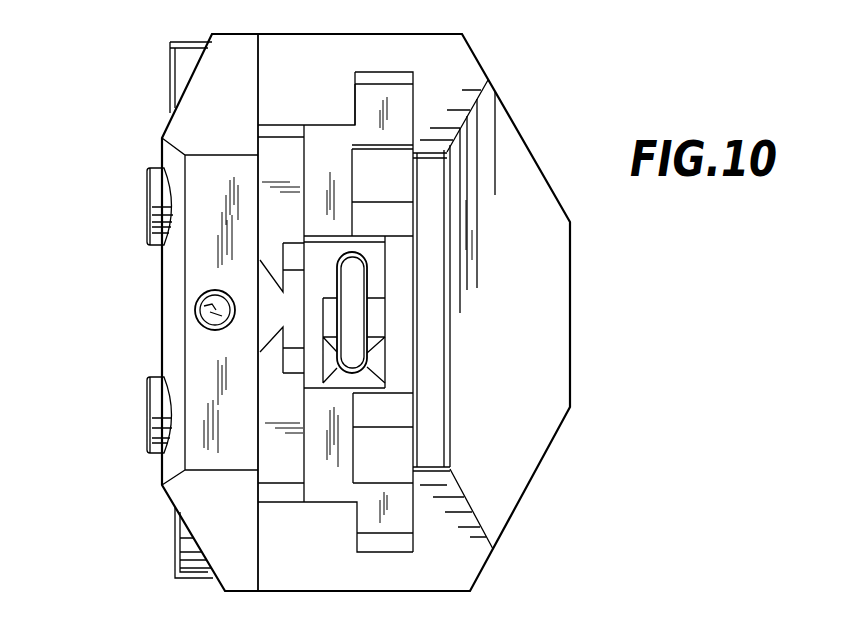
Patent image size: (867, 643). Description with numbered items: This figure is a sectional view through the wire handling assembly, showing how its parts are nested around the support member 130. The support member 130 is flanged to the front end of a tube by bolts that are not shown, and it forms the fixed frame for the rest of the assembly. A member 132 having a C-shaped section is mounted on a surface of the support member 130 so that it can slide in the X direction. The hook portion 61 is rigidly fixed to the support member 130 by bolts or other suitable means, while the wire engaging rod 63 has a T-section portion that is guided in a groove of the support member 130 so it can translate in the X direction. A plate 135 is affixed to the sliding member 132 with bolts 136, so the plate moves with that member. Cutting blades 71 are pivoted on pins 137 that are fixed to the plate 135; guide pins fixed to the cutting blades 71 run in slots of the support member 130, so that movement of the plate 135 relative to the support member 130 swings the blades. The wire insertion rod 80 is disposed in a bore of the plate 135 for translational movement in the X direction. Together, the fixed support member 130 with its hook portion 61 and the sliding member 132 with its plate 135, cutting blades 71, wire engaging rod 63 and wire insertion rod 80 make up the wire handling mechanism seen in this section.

The hook portion 61 is at (360, 268).
The wire engaging rod 63 is at (377, 320).
The cutting blades 71 is at (278, 182).
The wire insertion rod 80 is at (198, 302).
The support member 130 is at (395, 102).
The member 132 is at (517, 507).
The plate 135 is at (185, 472).
The bolts 136 is at (175, 562).
The pins 137 is at (147, 238).